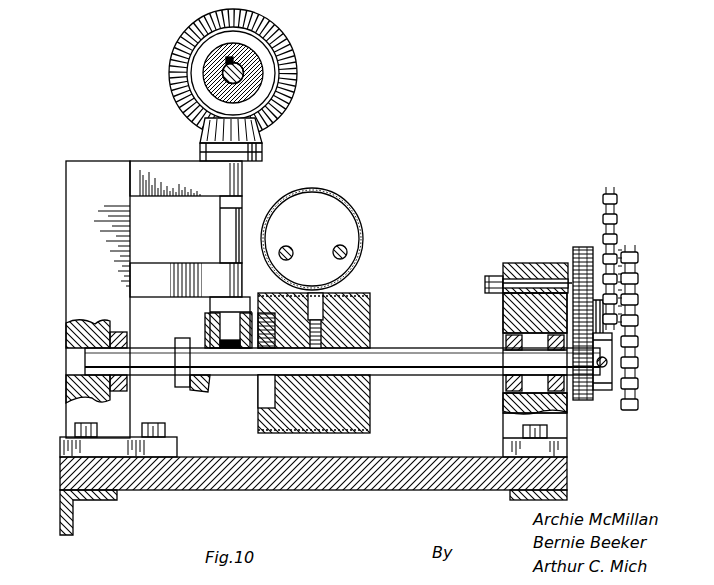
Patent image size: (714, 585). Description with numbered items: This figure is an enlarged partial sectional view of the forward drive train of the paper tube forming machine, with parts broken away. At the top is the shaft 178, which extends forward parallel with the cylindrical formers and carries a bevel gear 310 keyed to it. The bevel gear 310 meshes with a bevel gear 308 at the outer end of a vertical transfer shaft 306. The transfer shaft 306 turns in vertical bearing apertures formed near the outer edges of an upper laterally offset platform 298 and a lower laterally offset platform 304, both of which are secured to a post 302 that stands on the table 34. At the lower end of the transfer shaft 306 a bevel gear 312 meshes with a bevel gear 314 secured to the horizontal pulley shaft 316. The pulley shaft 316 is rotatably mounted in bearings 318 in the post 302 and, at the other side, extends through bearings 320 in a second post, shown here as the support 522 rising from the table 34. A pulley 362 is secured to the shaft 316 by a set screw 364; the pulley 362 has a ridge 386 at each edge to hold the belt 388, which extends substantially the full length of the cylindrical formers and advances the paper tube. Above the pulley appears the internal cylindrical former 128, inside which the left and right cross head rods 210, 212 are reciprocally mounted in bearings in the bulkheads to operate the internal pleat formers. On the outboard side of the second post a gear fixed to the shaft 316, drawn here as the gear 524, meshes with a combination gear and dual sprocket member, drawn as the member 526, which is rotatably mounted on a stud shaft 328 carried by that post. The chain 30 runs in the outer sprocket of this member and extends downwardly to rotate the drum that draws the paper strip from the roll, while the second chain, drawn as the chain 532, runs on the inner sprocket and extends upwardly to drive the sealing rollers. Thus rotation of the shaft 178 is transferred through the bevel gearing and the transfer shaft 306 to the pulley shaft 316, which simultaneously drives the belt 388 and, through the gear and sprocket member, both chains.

The shaft 178 is at (222, 76).
The bevel gear 310 is at (292, 94).
The bevel gear 308 is at (262, 133).
The upper laterally offset platform 298 is at (141, 161).
The vertical transfer shaft 306 is at (222, 208).
The lower laterally offset platform 304 is at (153, 273).
The post 302 is at (88, 257).
The bevel gear 312 is at (207, 316).
The pulley shaft 316 is at (100, 360).
The bearings 318 is at (130, 386).
The bevel gear 314 is at (200, 385).
The cylindrical former 128 is at (358, 226).
The cross head rod 210 is at (287, 246).
The cross head rod 212 is at (336, 246).
The ridge 386 is at (366, 294).
The belt 388 is at (350, 292).
The set screw 364 is at (327, 343).
The pulley 362 is at (350, 398).
The bearings 320 is at (503, 390).
The stud shaft 328 is at (530, 286).
The gear 526 is at (575, 256).
The gear hub 524 is at (585, 400).
The drive chain 532 is at (617, 211).
The chain 30 is at (639, 358).
The right pedestal 522 is at (566, 425).
The table 34 is at (190, 484).